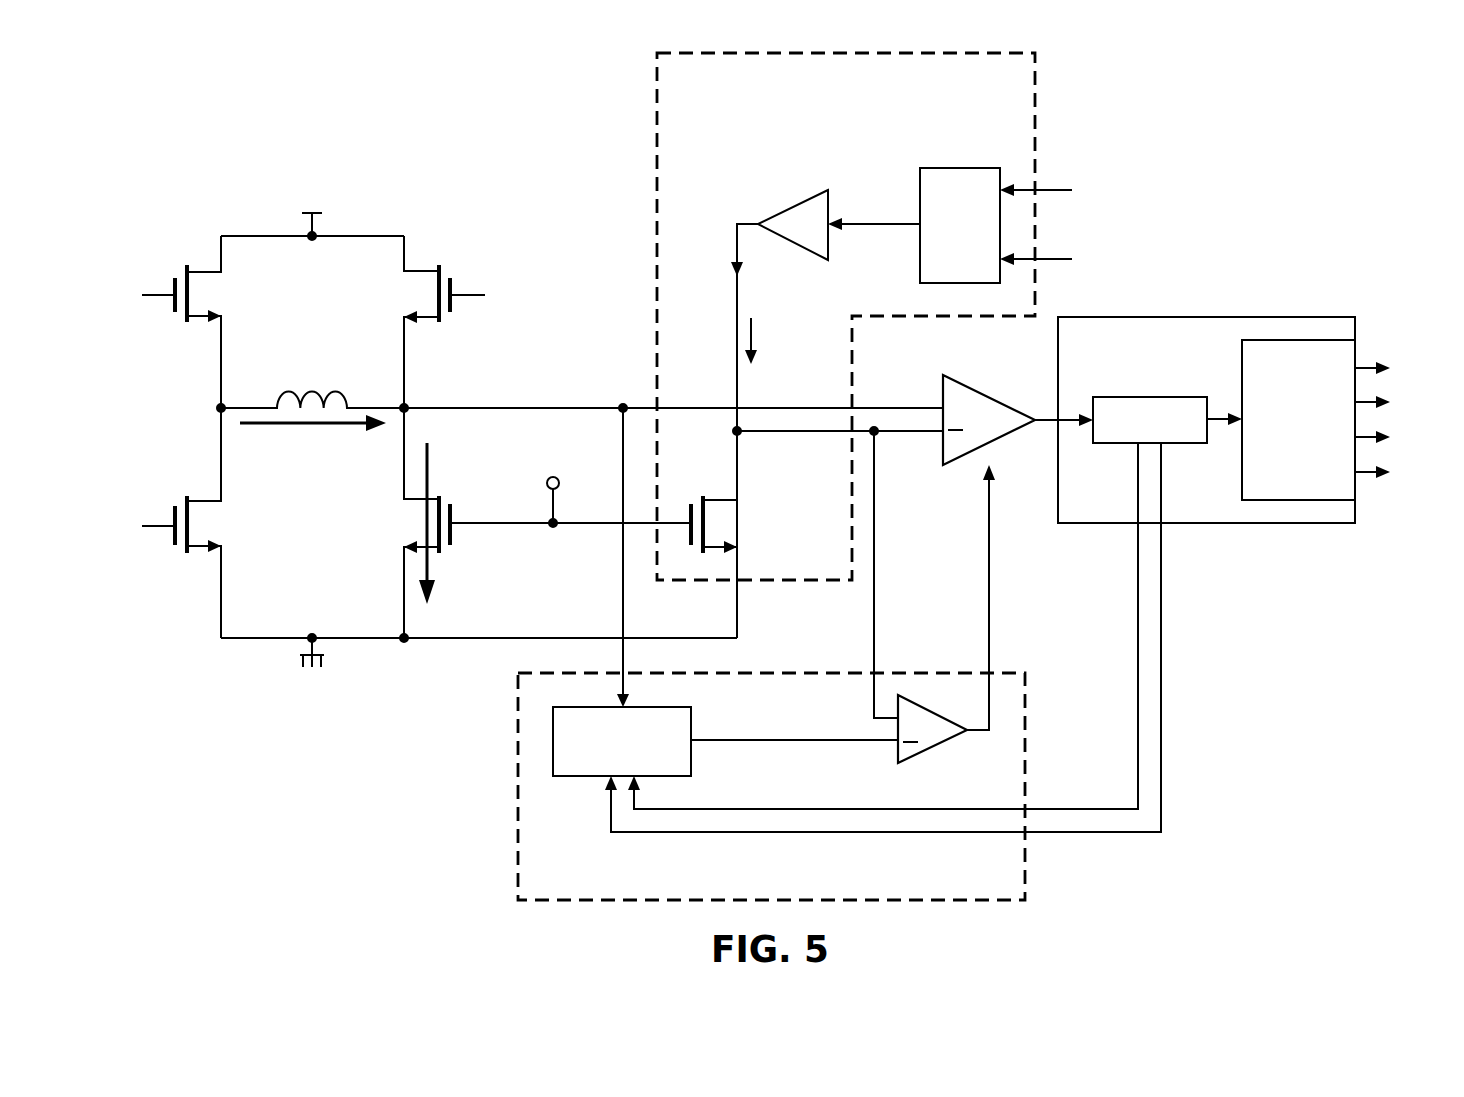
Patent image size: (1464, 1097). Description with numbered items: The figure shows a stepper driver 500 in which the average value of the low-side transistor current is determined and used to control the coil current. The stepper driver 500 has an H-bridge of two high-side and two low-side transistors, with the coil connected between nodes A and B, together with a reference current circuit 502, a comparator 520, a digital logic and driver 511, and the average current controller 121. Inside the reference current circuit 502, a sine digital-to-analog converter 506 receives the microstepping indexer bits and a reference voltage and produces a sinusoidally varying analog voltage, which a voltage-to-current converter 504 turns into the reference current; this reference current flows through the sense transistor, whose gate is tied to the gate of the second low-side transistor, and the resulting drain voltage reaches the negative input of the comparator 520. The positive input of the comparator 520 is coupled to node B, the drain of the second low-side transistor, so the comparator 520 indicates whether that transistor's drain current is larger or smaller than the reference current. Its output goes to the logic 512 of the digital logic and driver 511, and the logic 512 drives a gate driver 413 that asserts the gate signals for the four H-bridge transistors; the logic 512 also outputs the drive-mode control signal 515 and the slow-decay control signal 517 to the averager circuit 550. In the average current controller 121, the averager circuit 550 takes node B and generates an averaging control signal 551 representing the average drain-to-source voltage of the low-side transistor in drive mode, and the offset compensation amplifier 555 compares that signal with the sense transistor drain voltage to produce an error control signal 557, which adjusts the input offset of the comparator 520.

The stepper driver 500 is at (496, 100).
The reference current circuit 502 is at (1050, 108).
The voltage-to-current converter 504 is at (793, 204).
The sine digital-to-analog converter 506 is at (961, 166).
The comparator 520 is at (994, 397).
The error control signal 557 is at (992, 584).
The digital logic and driver 511 is at (1221, 538).
The logic 512 is at (1185, 444).
The gate driver 413 is at (1298, 420).
The SD control signal 517 is at (1136, 672).
The DRV control signal 515 is at (1163, 696).
The average current controller 121 is at (508, 788).
The averager circuit 550 is at (587, 778).
The averaging control signal 551 is at (793, 742).
The offset compensation amplifier 555 is at (930, 752).